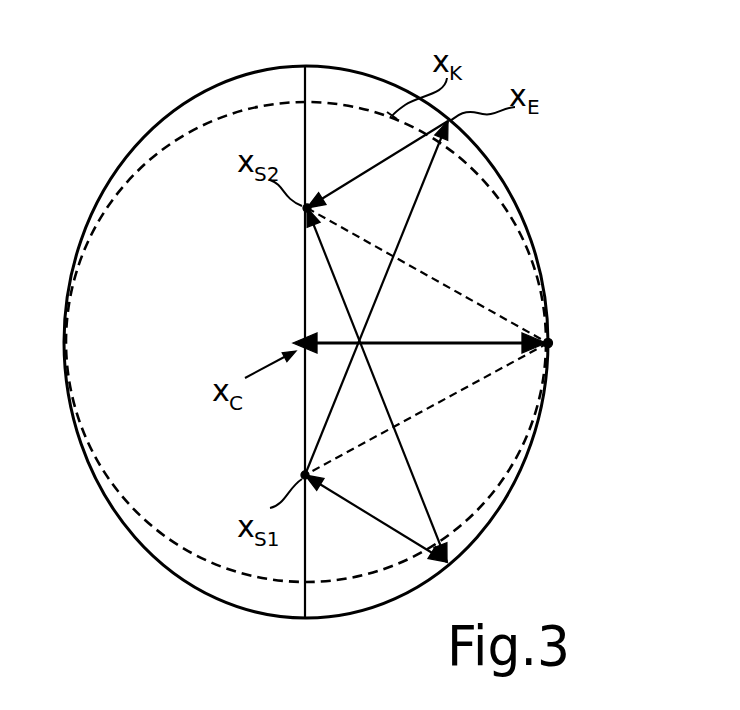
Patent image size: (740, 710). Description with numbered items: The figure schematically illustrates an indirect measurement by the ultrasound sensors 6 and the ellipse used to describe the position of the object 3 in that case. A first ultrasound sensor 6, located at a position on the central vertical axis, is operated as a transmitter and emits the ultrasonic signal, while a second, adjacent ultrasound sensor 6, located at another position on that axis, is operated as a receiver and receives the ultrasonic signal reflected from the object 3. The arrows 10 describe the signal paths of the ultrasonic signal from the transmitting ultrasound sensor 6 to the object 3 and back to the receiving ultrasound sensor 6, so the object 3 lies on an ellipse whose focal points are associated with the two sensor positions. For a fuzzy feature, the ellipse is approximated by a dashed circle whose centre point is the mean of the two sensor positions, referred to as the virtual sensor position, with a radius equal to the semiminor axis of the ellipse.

The object 3 is at (560, 335).
The arrows 10 is at (348, 178).
The ultrasound sensor 6 is at (288, 224).